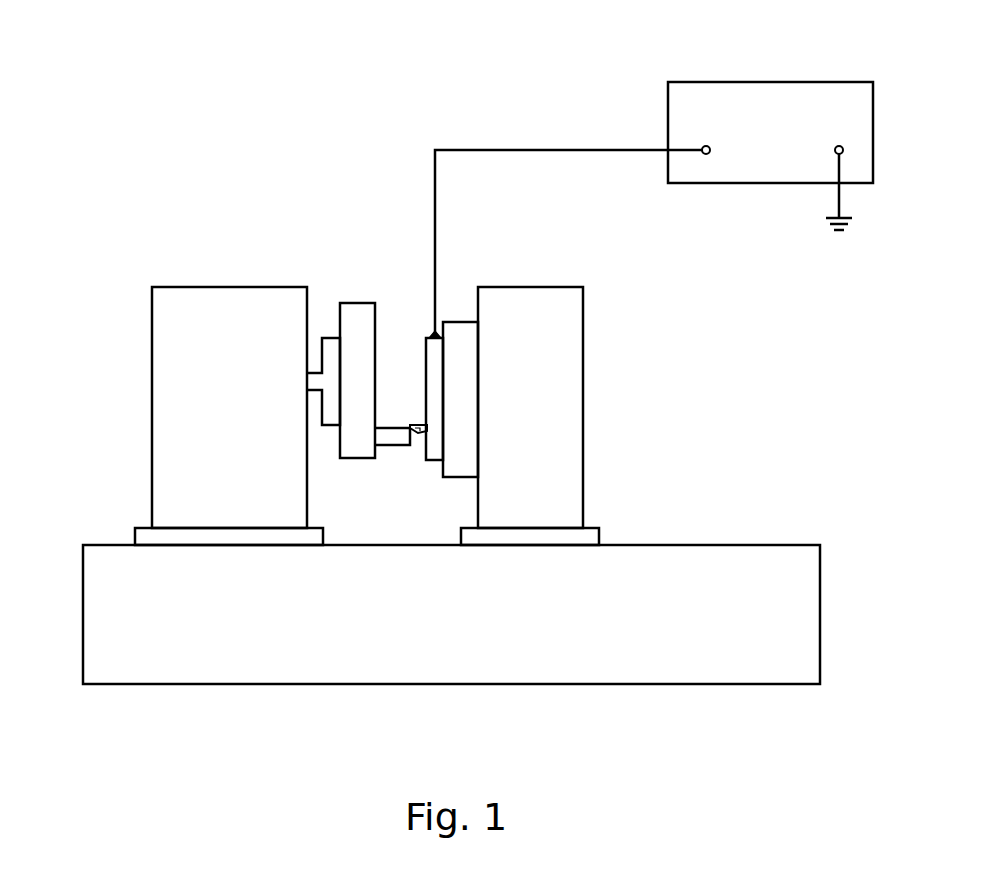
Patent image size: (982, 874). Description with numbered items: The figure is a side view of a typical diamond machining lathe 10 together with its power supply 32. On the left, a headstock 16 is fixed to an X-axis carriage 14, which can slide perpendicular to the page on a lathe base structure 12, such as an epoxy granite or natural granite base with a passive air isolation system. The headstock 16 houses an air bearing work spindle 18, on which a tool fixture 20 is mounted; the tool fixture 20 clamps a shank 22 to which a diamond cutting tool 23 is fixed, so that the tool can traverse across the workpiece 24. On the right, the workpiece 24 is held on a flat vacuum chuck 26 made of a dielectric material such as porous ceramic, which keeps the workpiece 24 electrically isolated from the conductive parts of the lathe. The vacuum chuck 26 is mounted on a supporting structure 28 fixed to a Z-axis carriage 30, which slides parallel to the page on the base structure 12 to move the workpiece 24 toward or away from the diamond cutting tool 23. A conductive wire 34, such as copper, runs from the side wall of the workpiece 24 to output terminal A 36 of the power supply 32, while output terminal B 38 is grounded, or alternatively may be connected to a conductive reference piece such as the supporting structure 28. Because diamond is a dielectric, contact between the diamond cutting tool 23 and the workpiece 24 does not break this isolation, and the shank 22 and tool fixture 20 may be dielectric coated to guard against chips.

The diamond machining lathe 10 is at (118, 243).
The lathe base structure 12 is at (100, 649).
The X-axis carriage 14 is at (143, 536).
The headstock 16 is at (169, 390).
The air bearing work spindle 18 is at (332, 378).
The tool fixture 20 is at (358, 330).
The shank 22 is at (396, 435).
The diamond cutting tool 23 is at (417, 433).
The workpiece 24 is at (436, 445).
The flat vacuum chuck 26 is at (452, 342).
The supporting structure 28 is at (547, 477).
The Z-axis carriage 30 is at (570, 536).
The power supply 32 is at (694, 98).
The conductive wire 34 is at (478, 148).
The output terminal A 36 is at (706, 158).
The output terminal B 38 is at (835, 152).